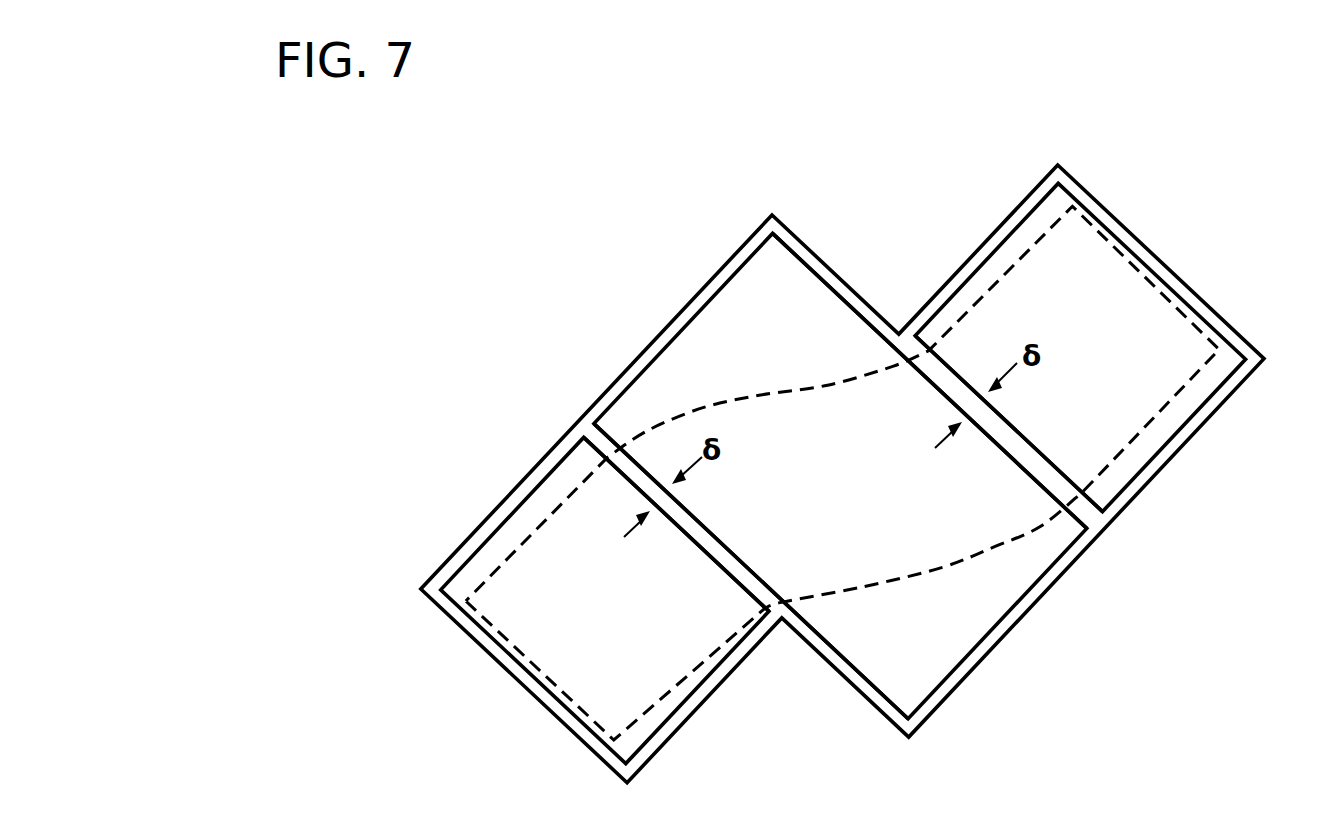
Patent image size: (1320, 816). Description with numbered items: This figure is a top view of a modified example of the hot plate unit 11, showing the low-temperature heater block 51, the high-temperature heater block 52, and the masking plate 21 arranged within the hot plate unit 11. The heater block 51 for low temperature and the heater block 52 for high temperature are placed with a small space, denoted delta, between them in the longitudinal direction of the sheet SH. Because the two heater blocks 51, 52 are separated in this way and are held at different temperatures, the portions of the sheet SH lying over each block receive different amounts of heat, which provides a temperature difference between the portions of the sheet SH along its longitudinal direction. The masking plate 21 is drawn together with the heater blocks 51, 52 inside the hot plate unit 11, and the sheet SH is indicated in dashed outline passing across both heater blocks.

The hot plate unit 11 is at (1210, 252).
The masking plate 21 is at (1087, 517).
The heater block for low temperature 51 is at (1153, 443).
The heater block for high temperature 52 is at (927, 660).
The sheet SH is at (990, 553).